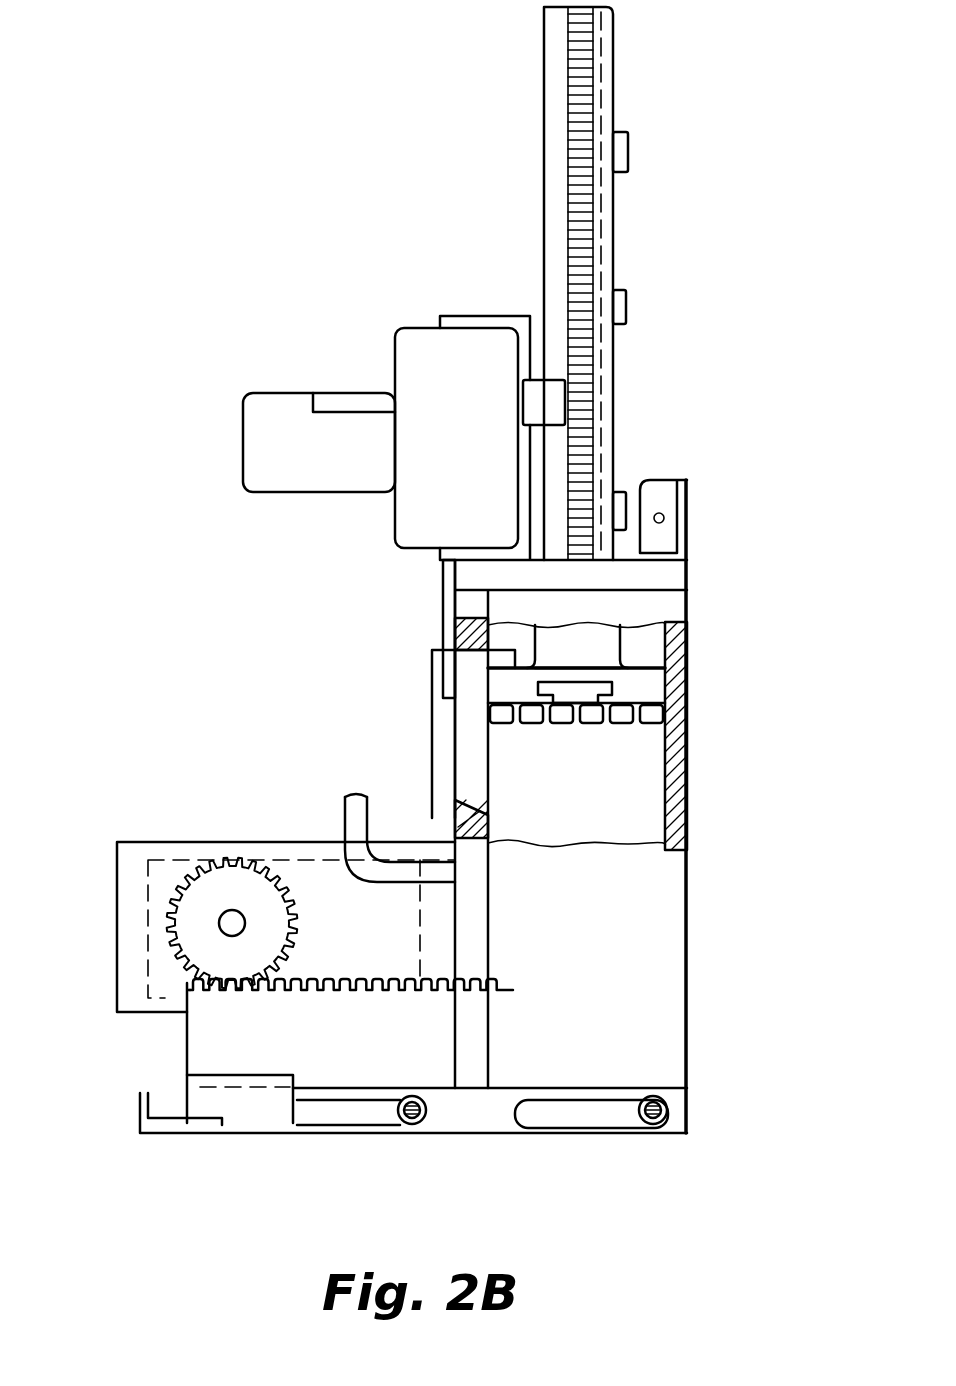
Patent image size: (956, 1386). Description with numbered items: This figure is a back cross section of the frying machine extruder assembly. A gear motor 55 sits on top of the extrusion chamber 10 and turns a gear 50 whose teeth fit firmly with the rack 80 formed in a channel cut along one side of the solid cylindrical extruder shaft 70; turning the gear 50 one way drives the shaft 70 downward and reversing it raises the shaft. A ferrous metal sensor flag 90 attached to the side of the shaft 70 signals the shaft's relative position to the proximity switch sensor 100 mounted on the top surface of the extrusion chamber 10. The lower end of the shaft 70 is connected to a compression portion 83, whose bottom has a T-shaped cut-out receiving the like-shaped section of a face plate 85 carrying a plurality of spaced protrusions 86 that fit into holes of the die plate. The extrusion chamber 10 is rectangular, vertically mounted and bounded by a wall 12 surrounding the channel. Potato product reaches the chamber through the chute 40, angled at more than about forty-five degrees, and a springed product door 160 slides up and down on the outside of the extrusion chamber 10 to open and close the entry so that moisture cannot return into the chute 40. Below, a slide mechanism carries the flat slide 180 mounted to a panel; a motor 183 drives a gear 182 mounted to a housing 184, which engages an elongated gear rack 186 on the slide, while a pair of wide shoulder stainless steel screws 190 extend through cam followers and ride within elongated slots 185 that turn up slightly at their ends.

The extrusion chamber 10 is at (620, 983).
The wall 12 is at (687, 800).
The chute 40 is at (463, 803).
The gear 50 is at (563, 412).
The gear motor 55 is at (263, 428).
The extruder shaft 70 is at (615, 80).
The rack 80 is at (594, 232).
The compression portion 83 is at (652, 690).
The face plate 85 is at (641, 697).
The spaced protrusions 86 is at (620, 724).
The ferrous metal sensor flag 90 is at (628, 155).
The proximity switch sensor 100 is at (664, 518).
The springed product door 160 is at (455, 633).
The slide 180 is at (478, 1117).
The gear 182 is at (192, 932).
The motor 183 is at (172, 868).
The housing 184 is at (117, 937).
The elongated slots 185 is at (340, 1115).
The elongated gear rack 186 is at (230, 1024).
The wide shoulder stainless steel screws 190 is at (410, 1124).